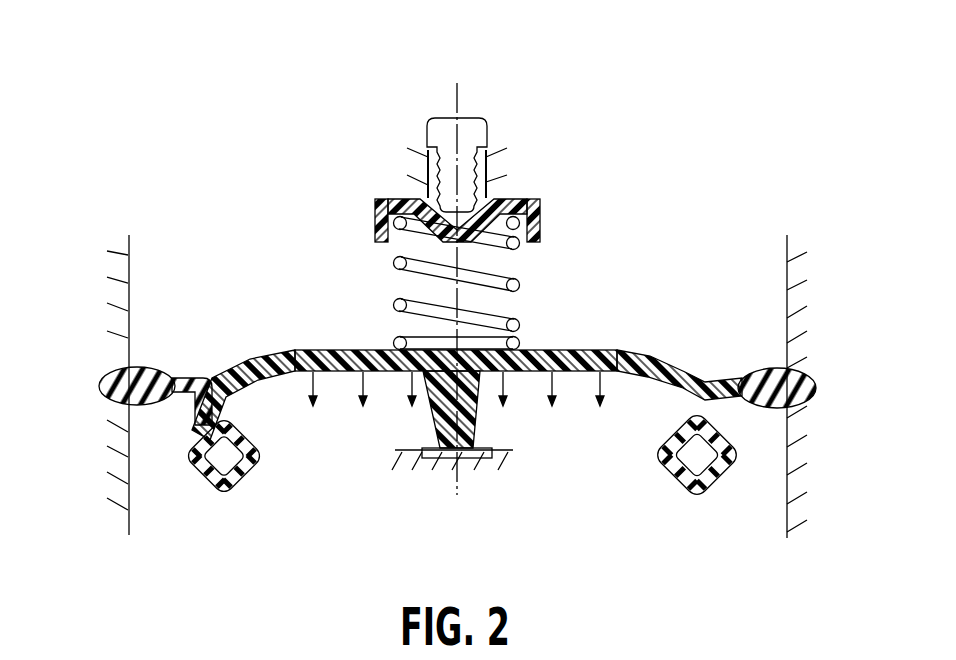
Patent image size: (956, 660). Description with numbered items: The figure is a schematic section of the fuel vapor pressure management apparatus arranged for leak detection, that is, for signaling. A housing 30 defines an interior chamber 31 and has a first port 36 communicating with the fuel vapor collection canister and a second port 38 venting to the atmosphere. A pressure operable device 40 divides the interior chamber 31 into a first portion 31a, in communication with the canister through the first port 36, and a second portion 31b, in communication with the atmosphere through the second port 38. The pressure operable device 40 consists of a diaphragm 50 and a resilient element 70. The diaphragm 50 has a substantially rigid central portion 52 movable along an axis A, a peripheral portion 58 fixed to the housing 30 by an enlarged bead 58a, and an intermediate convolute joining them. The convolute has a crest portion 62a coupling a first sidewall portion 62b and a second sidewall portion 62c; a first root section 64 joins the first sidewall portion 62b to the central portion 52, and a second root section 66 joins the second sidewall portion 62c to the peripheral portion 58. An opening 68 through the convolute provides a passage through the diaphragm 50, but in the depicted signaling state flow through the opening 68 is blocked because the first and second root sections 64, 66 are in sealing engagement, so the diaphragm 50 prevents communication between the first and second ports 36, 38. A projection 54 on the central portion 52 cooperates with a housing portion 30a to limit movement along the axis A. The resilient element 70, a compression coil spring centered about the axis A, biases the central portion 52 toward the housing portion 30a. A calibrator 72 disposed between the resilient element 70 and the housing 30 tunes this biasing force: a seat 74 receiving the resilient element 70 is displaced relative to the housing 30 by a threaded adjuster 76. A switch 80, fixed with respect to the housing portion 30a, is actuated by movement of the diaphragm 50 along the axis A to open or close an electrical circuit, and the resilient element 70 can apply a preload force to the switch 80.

The axis A is at (457, 100).
The housing 30 is at (787, 274).
The housing portion 30a is at (416, 452).
The interior chamber 31 is at (790, 418).
The first portion 31a is at (778, 500).
The second portion 31b is at (760, 317).
The first port 36 is at (129, 523).
The second port 38 is at (130, 242).
The pressure operable device 40 is at (251, 128).
The diaphragm 50 is at (296, 348).
The central portion 52 is at (563, 350).
The projection 54 is at (448, 395).
The peripheral portion 58 is at (100, 405).
The enlarged bead 58a is at (100, 385).
The crest portion 62a is at (227, 497).
The first sidewall portion 62b is at (262, 460).
The second sidewall portion 62c is at (188, 465).
The first root section 64 is at (658, 363).
The second root section 66 is at (730, 475).
The opening 68 is at (683, 490).
The resilient element 70 is at (393, 305).
The calibrator 72 is at (372, 60).
The seat 74 is at (377, 197).
The threaded adjuster 76 is at (432, 120).
The switch 80 is at (483, 460).